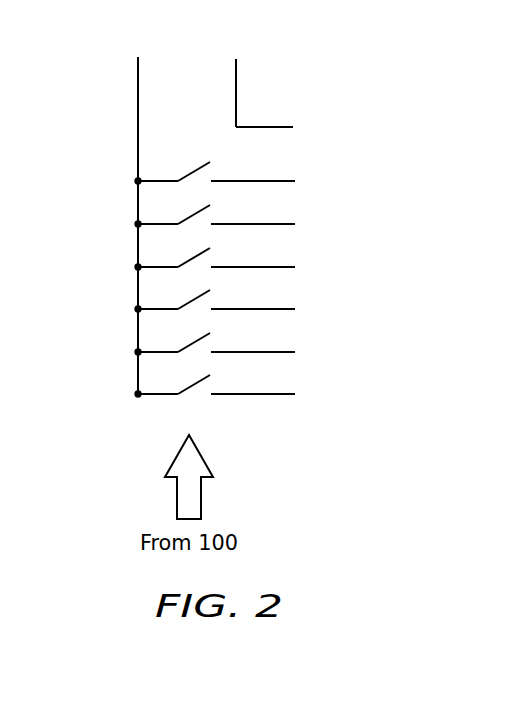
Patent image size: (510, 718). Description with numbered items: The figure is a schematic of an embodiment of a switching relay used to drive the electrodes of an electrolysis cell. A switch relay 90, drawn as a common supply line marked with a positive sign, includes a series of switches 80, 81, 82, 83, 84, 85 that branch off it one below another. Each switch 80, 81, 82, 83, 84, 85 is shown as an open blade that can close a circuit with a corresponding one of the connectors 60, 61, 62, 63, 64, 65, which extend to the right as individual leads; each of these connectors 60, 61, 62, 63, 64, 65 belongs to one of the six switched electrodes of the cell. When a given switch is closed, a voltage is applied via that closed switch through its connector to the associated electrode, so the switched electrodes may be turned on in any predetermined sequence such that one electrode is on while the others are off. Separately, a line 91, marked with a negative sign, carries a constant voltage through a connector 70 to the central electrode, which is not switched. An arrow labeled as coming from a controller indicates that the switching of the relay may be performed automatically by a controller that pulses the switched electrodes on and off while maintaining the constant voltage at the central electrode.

The switch relay 90 is at (138, 108).
The line 91 is at (236, 90).
The connector 70 is at (280, 128).
The connector 60 is at (268, 182).
The connector 61 is at (268, 225).
The connector 62 is at (268, 268).
The connector 63 is at (268, 310).
The connector 64 is at (268, 353).
The connector 65 is at (268, 395).
The switch 80 is at (172, 184).
The switch 81 is at (172, 227).
The switch 82 is at (172, 270).
The switch 83 is at (172, 312).
The switch 84 is at (172, 355).
The switch 85 is at (172, 397).